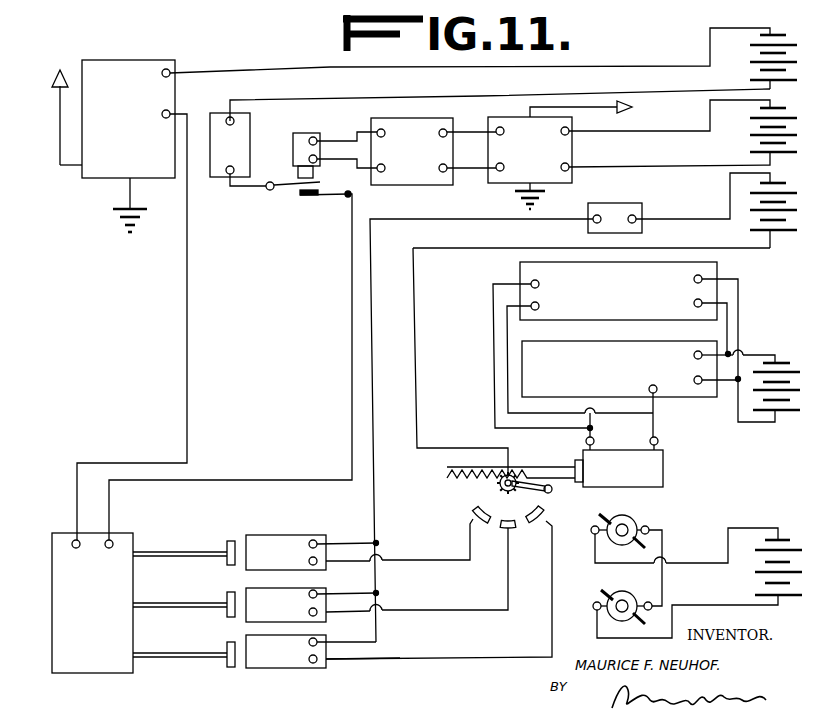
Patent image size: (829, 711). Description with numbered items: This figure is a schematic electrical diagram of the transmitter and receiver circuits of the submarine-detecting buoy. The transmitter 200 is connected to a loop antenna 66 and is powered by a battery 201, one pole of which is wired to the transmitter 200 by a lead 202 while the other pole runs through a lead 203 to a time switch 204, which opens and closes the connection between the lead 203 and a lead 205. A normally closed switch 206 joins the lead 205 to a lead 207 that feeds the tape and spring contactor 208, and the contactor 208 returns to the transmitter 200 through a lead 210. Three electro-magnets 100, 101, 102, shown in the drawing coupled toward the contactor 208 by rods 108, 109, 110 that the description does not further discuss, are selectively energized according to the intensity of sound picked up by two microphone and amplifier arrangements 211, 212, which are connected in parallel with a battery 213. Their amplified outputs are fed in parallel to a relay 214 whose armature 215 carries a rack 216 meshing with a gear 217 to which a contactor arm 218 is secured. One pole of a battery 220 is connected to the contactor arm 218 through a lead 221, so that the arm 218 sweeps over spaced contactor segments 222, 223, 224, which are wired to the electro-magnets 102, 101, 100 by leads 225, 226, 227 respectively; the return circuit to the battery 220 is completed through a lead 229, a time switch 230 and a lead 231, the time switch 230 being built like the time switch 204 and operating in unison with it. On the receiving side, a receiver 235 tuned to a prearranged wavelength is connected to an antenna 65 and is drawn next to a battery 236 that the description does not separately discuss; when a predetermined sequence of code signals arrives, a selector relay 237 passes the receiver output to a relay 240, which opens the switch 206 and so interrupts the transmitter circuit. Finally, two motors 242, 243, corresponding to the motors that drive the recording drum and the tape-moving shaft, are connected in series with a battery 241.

The loop antenna 66 is at (60, 118).
The transmitter 200 is at (128, 146).
The electric battery 201 is at (752, 77).
The lead 202 is at (580, 58).
The lead 203 is at (490, 94).
The time switch 204 is at (218, 177).
The lead 205 is at (256, 190).
The switch 206 is at (291, 196).
The lead 207 is at (352, 282).
The tape and spring contactor 208 is at (92, 603).
The lead 210 is at (187, 345).
The microphone and amplifier arrangement 211 is at (716, 271).
The microphone and amplifier arrangement 212 is at (685, 396).
The battery 213 is at (770, 346).
The relay 214 is at (664, 472).
The armature 215 is at (547, 458).
The rack 216 is at (447, 472).
The gear 217 is at (496, 486).
The contactor arm 218 is at (526, 495).
The battery 220 is at (770, 246).
The lead 221 is at (414, 292).
The contactor segment 222 is at (537, 528).
The contactor segment 223 is at (501, 528).
The contactor segment 224 is at (471, 516).
The lead 225 is at (458, 660).
The lead 226 is at (456, 612).
The lead 227 is at (431, 560).
The conductor 229 is at (370, 240).
The time switch 230 is at (588, 216).
The lead 231 is at (672, 208).
The receiver 235 is at (549, 116).
The battery 236 is at (752, 150).
The selector relay 237 is at (400, 118).
The relay 240 is at (292, 147).
The battery 241 is at (758, 580).
The motor 242 is at (634, 523).
The motor 243 is at (597, 609).
The antenna 65 is at (622, 91).
The electro-magnet 100 is at (245, 540).
The electro-magnet 101 is at (258, 614).
The electro-magnet 102 is at (268, 664).
The rod 108 is at (142, 548).
The rod 109 is at (178, 566).
The rod 110 is at (170, 643).